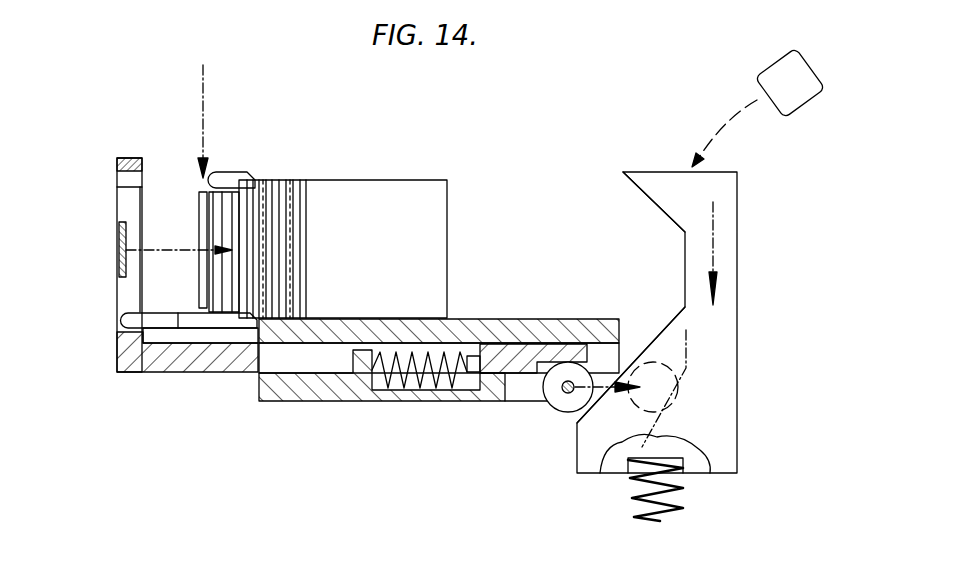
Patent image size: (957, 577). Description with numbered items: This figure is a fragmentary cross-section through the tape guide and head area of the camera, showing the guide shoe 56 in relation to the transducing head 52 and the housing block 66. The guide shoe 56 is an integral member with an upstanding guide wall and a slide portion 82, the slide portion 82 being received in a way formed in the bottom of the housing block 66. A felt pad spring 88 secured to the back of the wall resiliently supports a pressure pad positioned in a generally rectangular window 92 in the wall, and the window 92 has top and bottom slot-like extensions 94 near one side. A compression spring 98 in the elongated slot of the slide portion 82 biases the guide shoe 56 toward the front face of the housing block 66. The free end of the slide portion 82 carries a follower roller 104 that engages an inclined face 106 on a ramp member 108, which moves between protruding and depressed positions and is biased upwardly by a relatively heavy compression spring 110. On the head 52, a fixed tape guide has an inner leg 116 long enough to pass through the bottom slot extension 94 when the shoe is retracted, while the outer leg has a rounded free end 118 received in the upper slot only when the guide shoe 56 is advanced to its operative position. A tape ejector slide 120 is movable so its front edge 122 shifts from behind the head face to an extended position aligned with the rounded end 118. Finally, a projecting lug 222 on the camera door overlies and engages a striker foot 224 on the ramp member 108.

The transducing head 52 is at (372, 265).
The guide shoe 56 is at (108, 379).
The housing block 66 is at (478, 332).
The slide portion 82 is at (173, 365).
The felt pad spring 88 is at (120, 258).
The window 92 is at (125, 208).
The slot-like extensions 94 is at (125, 177).
The compression spring 98 is at (403, 386).
The follower roller 104 is at (553, 413).
The inclined face 106 is at (652, 348).
The ramp member 108 is at (713, 375).
The compression spring 110 is at (628, 488).
The inner leg 116 is at (152, 320).
The rounded free end 118 is at (223, 178).
The tape ejector slide 120 is at (225, 262).
The front edge 122 is at (200, 208).
The projecting lug 222 is at (766, 63).
The striker foot 224 is at (660, 172).